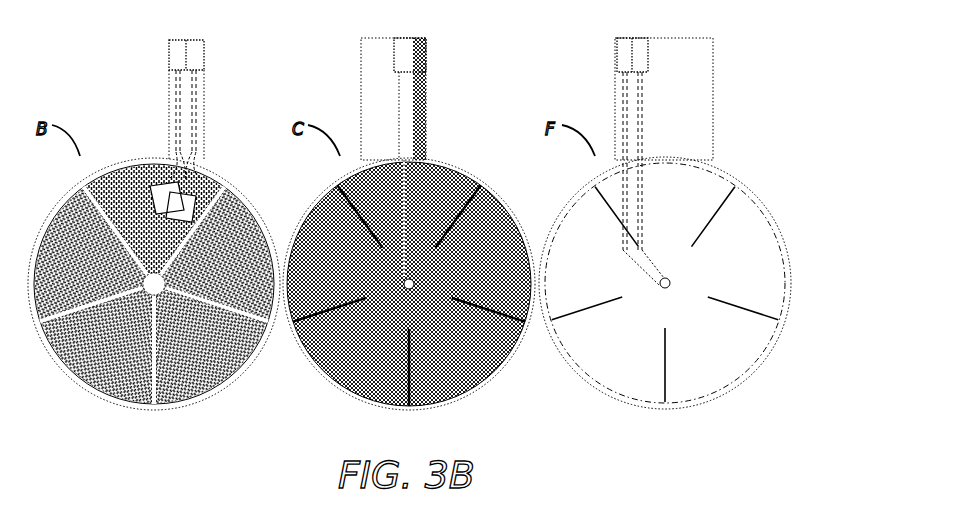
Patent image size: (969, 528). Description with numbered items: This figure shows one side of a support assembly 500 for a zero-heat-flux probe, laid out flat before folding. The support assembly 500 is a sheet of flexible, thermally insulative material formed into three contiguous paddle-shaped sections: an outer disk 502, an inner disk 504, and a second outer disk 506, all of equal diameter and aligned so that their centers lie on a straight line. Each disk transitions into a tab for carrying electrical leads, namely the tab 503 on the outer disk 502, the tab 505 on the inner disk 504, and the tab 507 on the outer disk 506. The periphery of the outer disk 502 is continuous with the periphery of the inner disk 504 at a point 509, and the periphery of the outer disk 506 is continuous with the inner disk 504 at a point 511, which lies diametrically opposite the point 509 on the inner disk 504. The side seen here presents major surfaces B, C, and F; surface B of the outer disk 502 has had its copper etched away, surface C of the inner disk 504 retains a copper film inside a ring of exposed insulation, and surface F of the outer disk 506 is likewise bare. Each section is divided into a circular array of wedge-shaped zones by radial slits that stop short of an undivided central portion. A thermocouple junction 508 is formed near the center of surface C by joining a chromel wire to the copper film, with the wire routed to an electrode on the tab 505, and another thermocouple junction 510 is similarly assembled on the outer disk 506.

The support assembly 500 is at (757, 166).
The outer disk 502 is at (88, 405).
The tab 503 is at (204, 92).
The inner disk 504 is at (470, 408).
The tab 505 is at (360, 84).
The outer disk 506 is at (740, 380).
The tab 507 is at (714, 90).
The thermocouple junction 508 is at (405, 290).
The point of continuity 509 is at (286, 300).
The thermocouple junction 510 is at (672, 282).
The point of continuity 511 is at (538, 298).